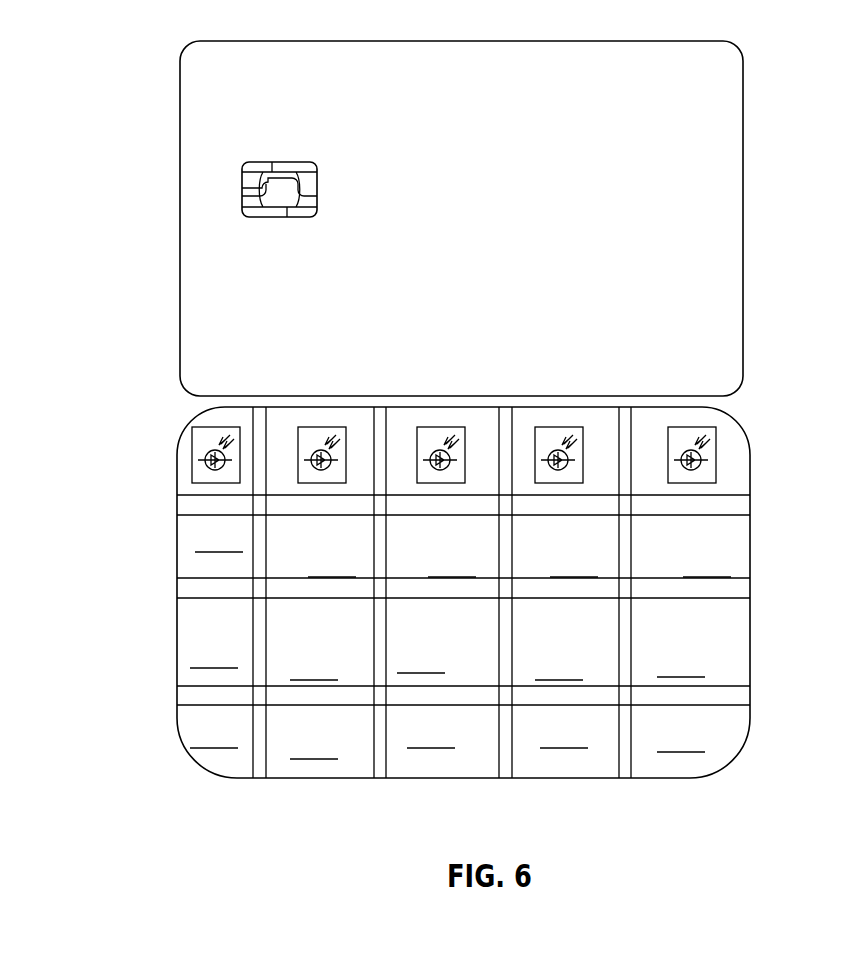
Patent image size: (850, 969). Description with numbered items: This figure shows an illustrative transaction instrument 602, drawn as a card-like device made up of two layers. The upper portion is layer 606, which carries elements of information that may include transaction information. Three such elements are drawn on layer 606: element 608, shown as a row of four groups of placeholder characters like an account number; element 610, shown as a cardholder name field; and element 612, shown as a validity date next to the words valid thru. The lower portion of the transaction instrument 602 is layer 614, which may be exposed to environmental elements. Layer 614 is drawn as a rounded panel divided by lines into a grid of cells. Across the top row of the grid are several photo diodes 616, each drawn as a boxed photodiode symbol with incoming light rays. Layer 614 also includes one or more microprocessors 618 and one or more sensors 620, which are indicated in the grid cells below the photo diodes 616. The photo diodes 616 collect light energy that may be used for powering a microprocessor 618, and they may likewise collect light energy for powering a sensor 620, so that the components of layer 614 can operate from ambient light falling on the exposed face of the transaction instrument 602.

The transaction instrument 602 is at (668, 41).
The layer 606 is at (743, 281).
The element 608 is at (708, 251).
The element 610 is at (253, 343).
The element 612 is at (552, 316).
The layer 614 is at (750, 645).
The photo diodes 616 is at (757, 420).
The microprocessors 618 is at (267, 517).
The sensors 620 is at (460, 642).